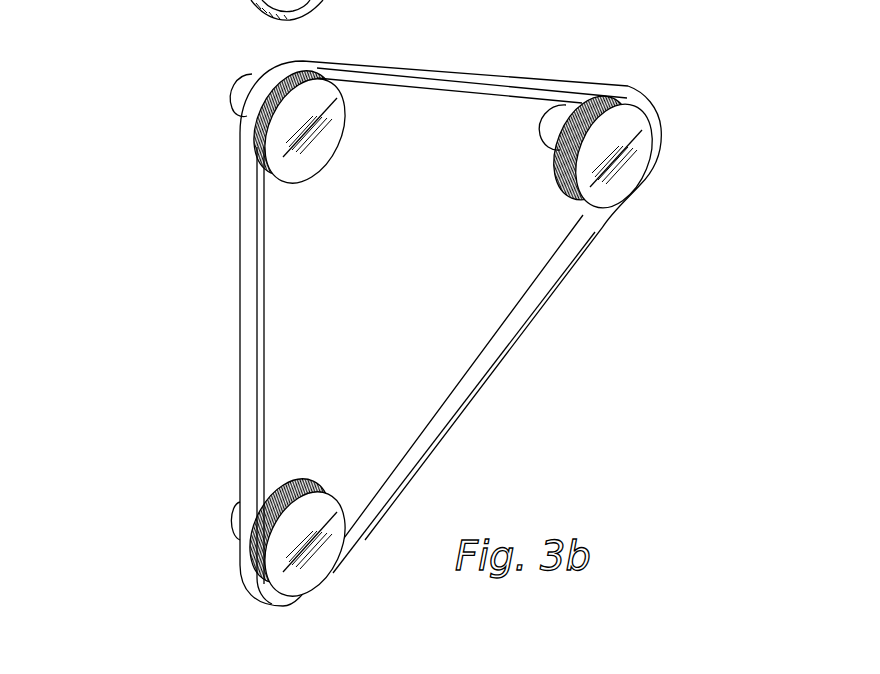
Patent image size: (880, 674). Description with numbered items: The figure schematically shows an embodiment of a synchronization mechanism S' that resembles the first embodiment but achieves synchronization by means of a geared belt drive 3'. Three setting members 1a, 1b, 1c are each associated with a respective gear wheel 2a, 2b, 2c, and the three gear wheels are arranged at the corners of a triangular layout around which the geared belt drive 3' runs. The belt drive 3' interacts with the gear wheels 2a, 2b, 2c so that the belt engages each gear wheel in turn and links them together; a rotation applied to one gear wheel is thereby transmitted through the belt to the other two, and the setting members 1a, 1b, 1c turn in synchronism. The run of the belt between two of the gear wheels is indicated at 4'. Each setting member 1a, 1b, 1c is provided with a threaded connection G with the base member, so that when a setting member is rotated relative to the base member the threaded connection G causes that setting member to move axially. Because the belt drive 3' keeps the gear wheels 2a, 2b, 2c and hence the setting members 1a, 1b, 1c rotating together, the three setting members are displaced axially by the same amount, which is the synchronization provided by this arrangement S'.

The setting member 1a is at (235, 522).
The setting member 1b is at (247, 100).
The setting member 1c is at (553, 118).
The gear wheel 2a is at (330, 490).
The gear wheel 2b is at (320, 168).
The gear wheel 2c is at (662, 120).
The geared belt drive 3' is at (434, 333).
The belt strand 4' is at (520, 313).
The belt drive system S' is at (87, 200).
The threaded connection G is at (247, 88).